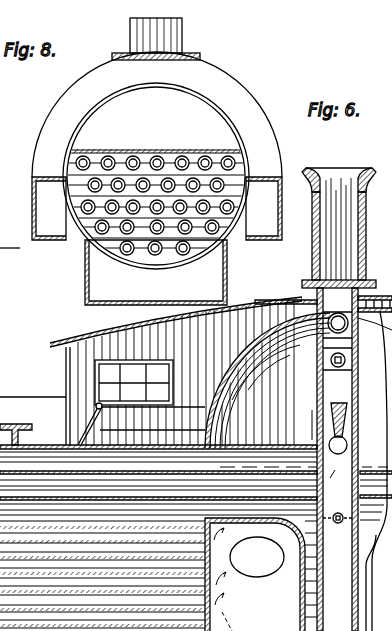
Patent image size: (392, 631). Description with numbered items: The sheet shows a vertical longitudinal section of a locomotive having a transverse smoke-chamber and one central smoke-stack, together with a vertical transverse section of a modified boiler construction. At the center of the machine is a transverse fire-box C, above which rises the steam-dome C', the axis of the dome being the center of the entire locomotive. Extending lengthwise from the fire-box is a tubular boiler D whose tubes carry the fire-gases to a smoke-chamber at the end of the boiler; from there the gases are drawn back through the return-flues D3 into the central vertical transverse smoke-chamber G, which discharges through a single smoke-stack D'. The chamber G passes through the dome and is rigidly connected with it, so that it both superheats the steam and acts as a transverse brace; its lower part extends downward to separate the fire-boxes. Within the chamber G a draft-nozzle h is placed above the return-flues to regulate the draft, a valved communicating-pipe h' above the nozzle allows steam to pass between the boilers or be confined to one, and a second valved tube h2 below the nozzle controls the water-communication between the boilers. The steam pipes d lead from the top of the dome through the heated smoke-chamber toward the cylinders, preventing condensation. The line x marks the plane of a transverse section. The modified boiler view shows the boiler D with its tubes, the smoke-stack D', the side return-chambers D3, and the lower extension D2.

In FIG. 8, the smoke-stack D' is at (158, 39).
In FIG. 8, the boiler D is at (156, 176).
In FIG. 6, the boiler D is at (196, 398).
In FIG. 8, the bottom extension (fire-box) of the boiler D2 is at (130, 297).
In FIG. 8, the return-flues D3 is at (157, 208).
In FIG. 6, the return-flues D3 is at (70, 498).
In FIG. 6, the transverse smoke-chamber G is at (337, 459).
In FIG. 6, the steam pipes d is at (327, 328).
In FIG. 6, the valved communicating-pipe h' is at (352, 355).
In FIG. 6, the draft-nozzle h is at (338, 420).
In FIG. 6, the valved tube h2 is at (337, 530).
In FIG. 6, the steam-dome C' is at (296, 471).
In FIG. 6, the fire-box C is at (255, 574).
In FIG. 6, the section line x x is at (151, 371).